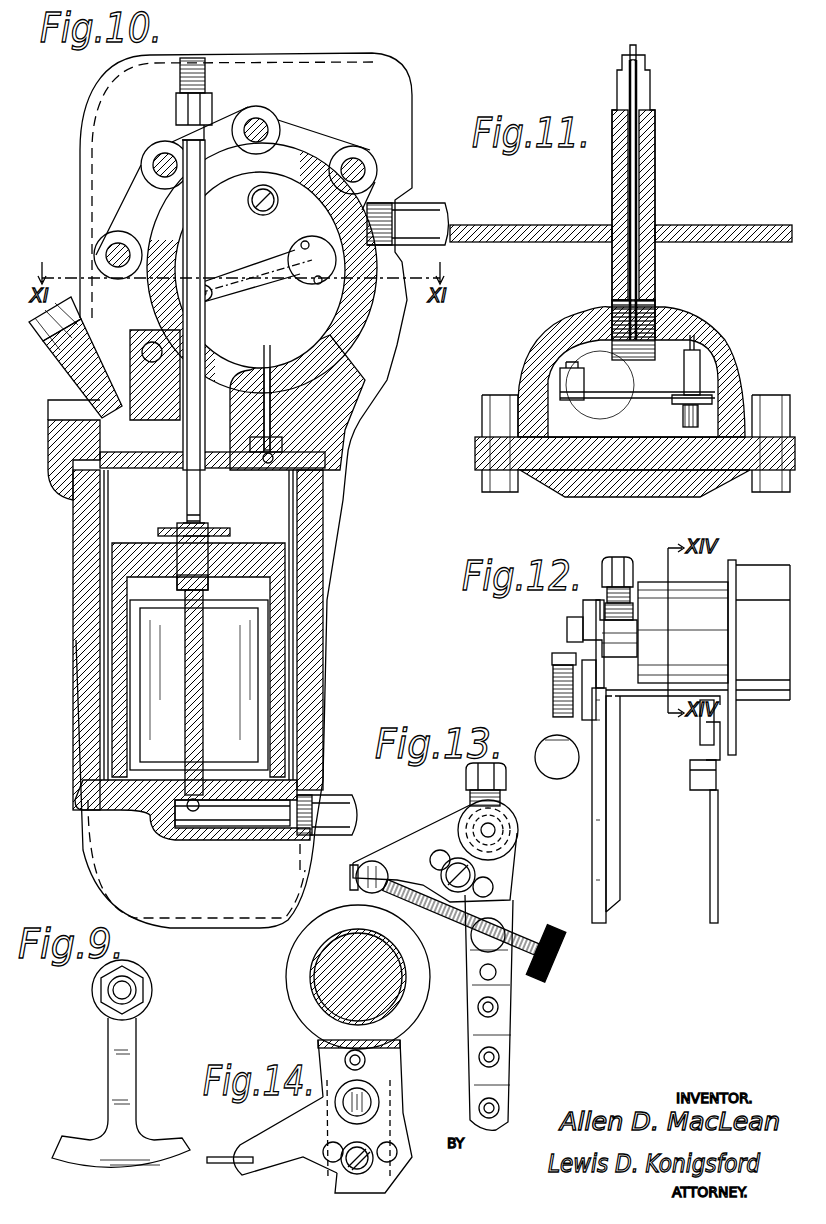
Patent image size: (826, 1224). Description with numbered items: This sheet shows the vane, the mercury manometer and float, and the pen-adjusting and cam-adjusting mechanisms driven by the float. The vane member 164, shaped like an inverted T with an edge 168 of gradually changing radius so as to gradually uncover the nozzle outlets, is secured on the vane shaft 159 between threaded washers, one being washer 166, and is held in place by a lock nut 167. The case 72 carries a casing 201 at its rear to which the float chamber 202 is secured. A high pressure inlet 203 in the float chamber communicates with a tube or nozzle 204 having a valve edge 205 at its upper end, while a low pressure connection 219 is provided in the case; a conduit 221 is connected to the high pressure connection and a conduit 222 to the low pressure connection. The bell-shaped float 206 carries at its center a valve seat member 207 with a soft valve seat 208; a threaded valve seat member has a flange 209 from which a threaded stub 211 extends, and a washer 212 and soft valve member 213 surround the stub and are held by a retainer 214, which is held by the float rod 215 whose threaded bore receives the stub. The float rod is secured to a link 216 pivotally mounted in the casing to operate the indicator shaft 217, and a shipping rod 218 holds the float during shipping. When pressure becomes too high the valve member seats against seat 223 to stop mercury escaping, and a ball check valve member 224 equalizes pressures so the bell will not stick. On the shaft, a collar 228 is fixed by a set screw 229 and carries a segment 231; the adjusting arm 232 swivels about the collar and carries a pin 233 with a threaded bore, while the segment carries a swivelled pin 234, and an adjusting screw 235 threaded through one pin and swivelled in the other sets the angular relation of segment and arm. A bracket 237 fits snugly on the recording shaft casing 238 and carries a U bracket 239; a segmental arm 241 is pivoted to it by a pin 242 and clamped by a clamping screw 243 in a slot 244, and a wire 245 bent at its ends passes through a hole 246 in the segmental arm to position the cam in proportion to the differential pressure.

In FIG. 10, the case 72 is at (103, 840).
In FIG. 11, the case 72 is at (714, 230).
In FIG. 9, the vane shaft 159 is at (118, 990).
In FIG. 9, the vane member 164 is at (136, 1052).
In FIG. 9, the threaded washer 166 is at (140, 976).
In FIG. 9, the lock nut 167 is at (140, 992).
In FIG. 9, the edge of gradually changing radius 168 is at (140, 1170).
In FIG. 10, the casing 201 is at (355, 330).
In FIG. 11, the casing 201 is at (742, 352).
In FIG. 10, the float chamber 202 is at (300, 545).
In FIG. 10, the high pressure inlet 203 is at (273, 822).
In FIG. 10, the tube or nozzle 204 is at (205, 700).
In FIG. 10, the valve edge 205 is at (205, 600).
In FIG. 10, the float 206 is at (284, 704).
In FIG. 10, the valve seat member 207 is at (178, 568).
In FIG. 10, the soft valve seat 208 is at (210, 586).
In FIG. 10, the flange 209 is at (177, 548).
In FIG. 10, the threaded stub 211 is at (205, 520).
In FIG. 10, the washer 212 is at (180, 531).
In FIG. 10, the soft valve member 213 is at (215, 538).
In FIG. 10, the retainer 214 is at (207, 528).
In FIG. 10, the float rod 215 is at (186, 496).
In FIG. 10, the link 216 is at (240, 268).
In FIG. 11, the link 216 is at (605, 400).
In FIG. 11, the indicator shaft 217 is at (636, 176).
In FIG. 12, the indicator shaft 217 is at (567, 628).
In FIG. 10, the shipping rod 218 is at (207, 240).
In FIG. 10, the low pressure connection 219 is at (402, 192).
In FIG. 10, the conduit 221 is at (345, 805).
In FIG. 10, the conduit 222 is at (442, 208).
In FIG. 10, the seat 223 is at (222, 400).
In FIG. 10, the ball check valve member 224 is at (272, 456).
In FIG. 12, the collar 228 is at (655, 630).
In FIG. 12, the set screw 229 is at (632, 552).
In FIG. 12, the segment 231 is at (596, 648).
In FIG. 13, the segment 231 is at (445, 832).
In FIG. 12, the adjusting arm 232 is at (592, 820).
In FIG. 13, the adjusting arm 232 is at (512, 1012).
In FIG. 12, the pin 233 is at (553, 696).
In FIG. 13, the pin 233 is at (505, 930).
In FIG. 12, the pin 234 is at (552, 668).
In FIG. 13, the pin 234 is at (378, 862).
In FIG. 12, the adjusting screw 235 is at (552, 738).
In FIG. 13, the adjusting screw 235 is at (565, 960).
In FIG. 12, the bracket 237 is at (737, 566).
In FIG. 14, the bracket 237 is at (298, 980).
In FIG. 11, the recording shaft casing 238 is at (657, 140).
In FIG. 12, the recording shaft casing 238 is at (662, 560).
In FIG. 14, the recording shaft casing 238 is at (322, 998).
In FIG. 12, the U bracket 239 is at (632, 693).
In FIG. 14, the U bracket 239 is at (400, 1052).
In FIG. 14, the segmental arm 241 is at (392, 1118).
In FIG. 12, the pin 242 is at (700, 742).
In FIG. 14, the pin 242 is at (380, 1092).
In FIG. 14, the clamping screw 243 is at (340, 1164).
In FIG. 12, the slot 244 is at (703, 775).
In FIG. 14, the slot 244 is at (395, 1140).
In FIG. 12, the wire 245 is at (710, 842).
In FIG. 14, the wire 245 is at (232, 1156).
In FIG. 14, the hole 246 is at (300, 1140).